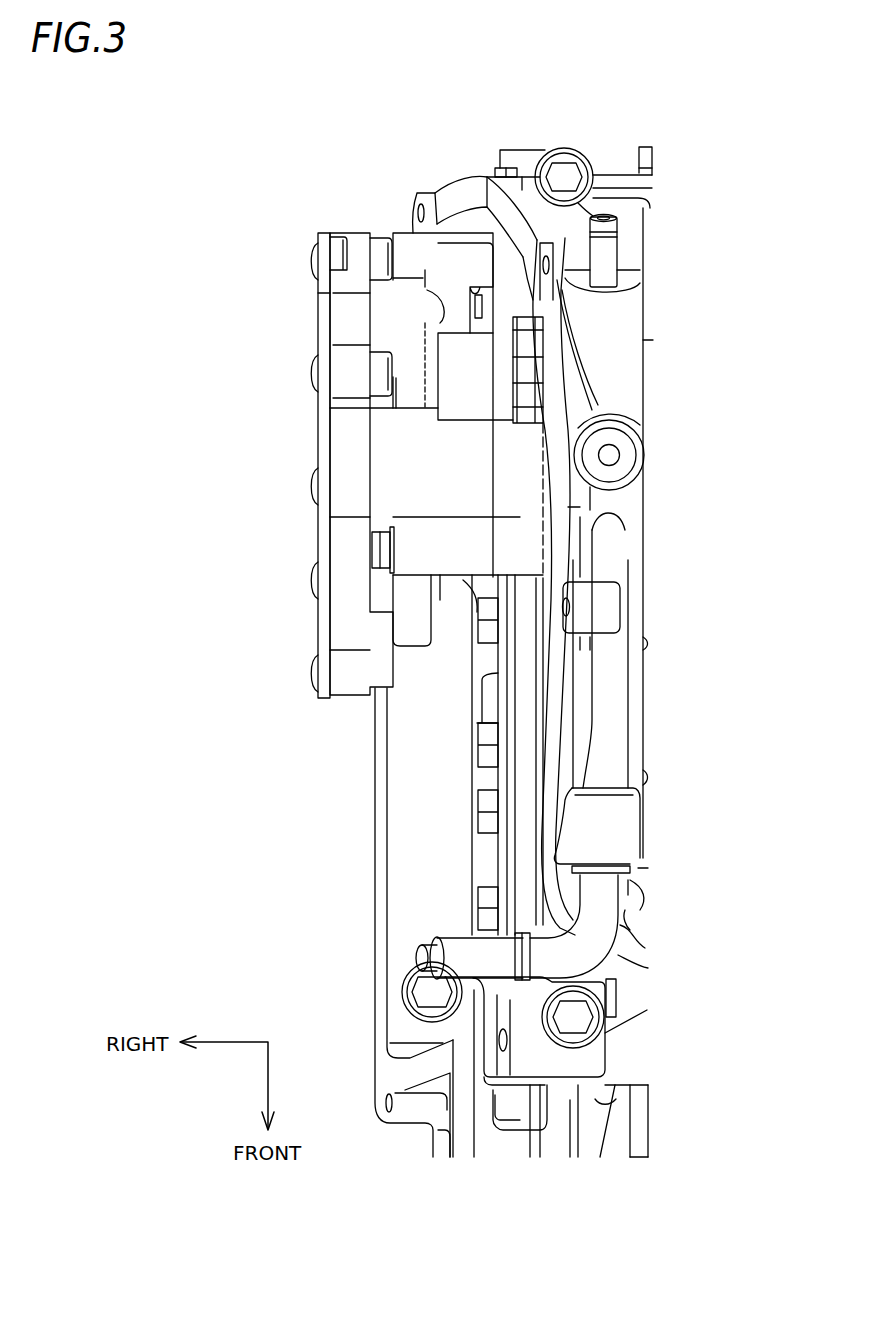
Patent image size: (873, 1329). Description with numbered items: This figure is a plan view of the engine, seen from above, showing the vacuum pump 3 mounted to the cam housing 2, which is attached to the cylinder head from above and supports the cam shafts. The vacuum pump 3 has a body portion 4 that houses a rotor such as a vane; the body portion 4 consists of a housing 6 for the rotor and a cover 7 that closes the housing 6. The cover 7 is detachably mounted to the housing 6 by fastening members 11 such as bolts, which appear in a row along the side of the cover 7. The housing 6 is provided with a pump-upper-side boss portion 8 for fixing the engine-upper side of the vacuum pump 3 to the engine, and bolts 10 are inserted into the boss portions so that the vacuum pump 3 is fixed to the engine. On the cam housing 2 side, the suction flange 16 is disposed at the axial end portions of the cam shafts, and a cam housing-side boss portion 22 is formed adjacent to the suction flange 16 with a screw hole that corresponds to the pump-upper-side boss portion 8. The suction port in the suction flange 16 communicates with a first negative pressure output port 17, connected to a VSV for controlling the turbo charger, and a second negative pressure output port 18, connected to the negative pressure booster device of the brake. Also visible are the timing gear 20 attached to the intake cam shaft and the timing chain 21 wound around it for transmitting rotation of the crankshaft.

The cam housing 2 is at (641, 593).
The vacuum pump 3 is at (401, 156).
The body portion 4 is at (366, 206).
The housing 6 is at (403, 230).
The cover 7 is at (322, 318).
The pump-upper-side boss portion 8 is at (520, 540).
The bolts 10 is at (372, 557).
The fastening members 11 is at (311, 258).
The suction flange 16 is at (562, 463).
The first negative pressure output port 17 is at (612, 250).
The second negative pressure output port 18 is at (418, 940).
The timing gear 20 is at (541, 742).
The timing chain 21 is at (522, 688).
The cam housing-side boss portion 22 is at (573, 527).